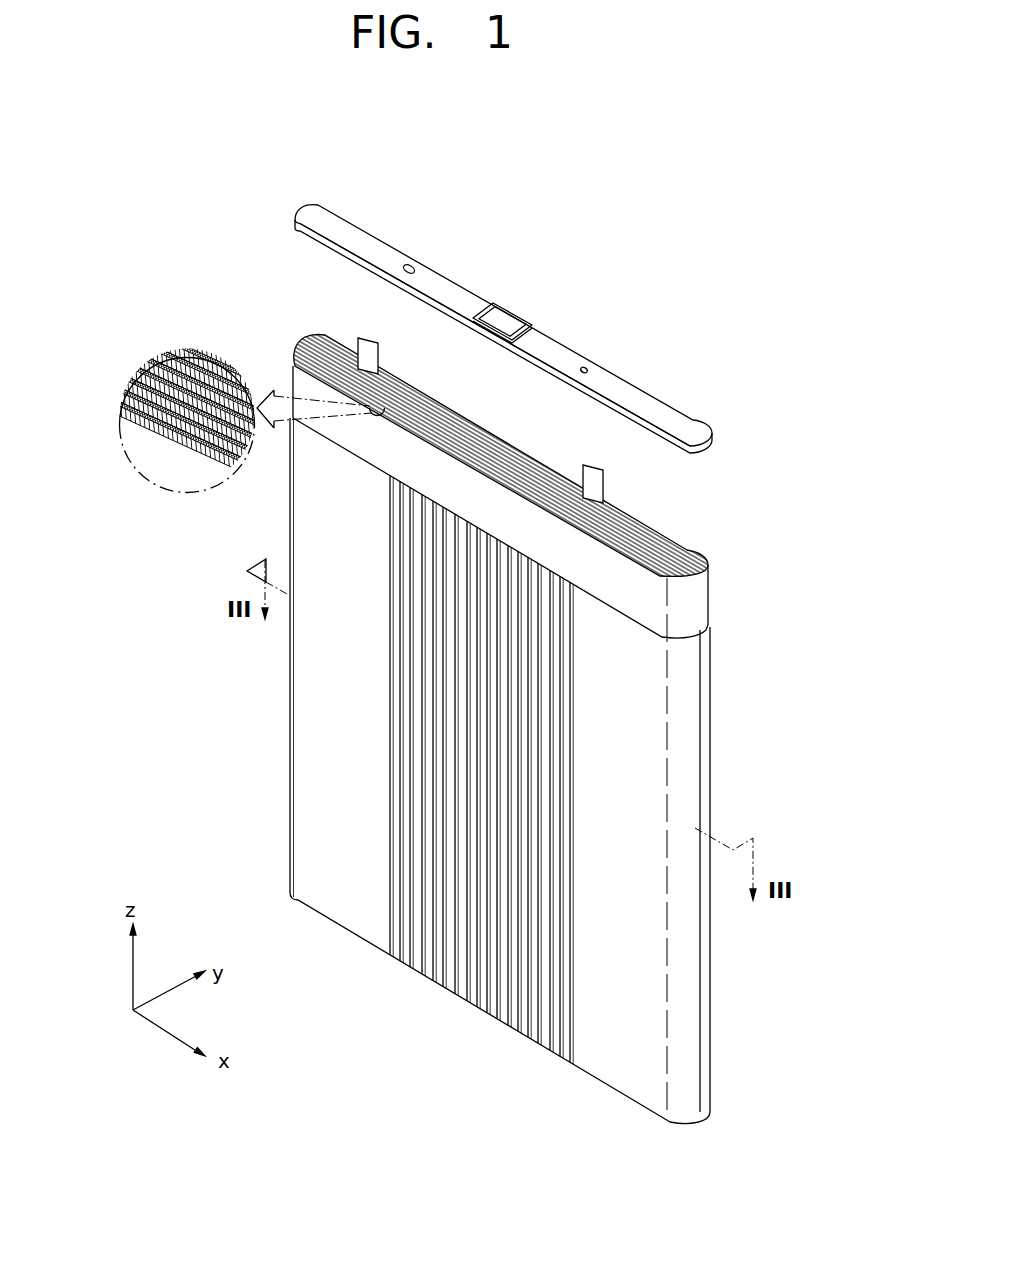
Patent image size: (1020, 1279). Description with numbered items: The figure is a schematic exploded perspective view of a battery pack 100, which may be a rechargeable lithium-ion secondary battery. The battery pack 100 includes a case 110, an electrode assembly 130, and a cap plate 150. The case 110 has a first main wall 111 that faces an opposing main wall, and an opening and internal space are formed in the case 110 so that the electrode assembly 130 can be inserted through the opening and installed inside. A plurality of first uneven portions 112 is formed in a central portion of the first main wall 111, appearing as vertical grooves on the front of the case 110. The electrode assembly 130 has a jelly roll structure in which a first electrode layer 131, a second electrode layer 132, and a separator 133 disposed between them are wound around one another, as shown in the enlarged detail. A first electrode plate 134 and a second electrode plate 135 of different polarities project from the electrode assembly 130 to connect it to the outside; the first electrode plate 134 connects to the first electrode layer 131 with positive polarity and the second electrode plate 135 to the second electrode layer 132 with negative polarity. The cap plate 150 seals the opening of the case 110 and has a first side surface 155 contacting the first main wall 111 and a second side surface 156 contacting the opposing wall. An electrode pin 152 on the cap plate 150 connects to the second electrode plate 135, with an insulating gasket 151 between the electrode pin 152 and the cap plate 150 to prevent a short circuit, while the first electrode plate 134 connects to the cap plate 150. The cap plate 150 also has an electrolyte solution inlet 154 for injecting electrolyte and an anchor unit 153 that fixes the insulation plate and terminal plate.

The battery pack 100 is at (625, 240).
The case 110 is at (440, 771).
The first main wall 111 is at (332, 754).
The first uneven portions 112 is at (412, 912).
The electrode assembly 130 is at (541, 691).
The first electrode layer 131 is at (183, 425).
The second electrode layer 132 is at (180, 431).
The separator 133 is at (177, 437).
The first electrode plate 134 is at (362, 340).
The second electrode plate 135 is at (603, 485).
The cap plate 150 is at (503, 304).
The gasket 151 is at (527, 325).
The electrode pin 152 is at (529, 285).
The anchor unit 153 is at (588, 366).
The electrolyte solution inlet 154 is at (410, 265).
The first side surface 155 is at (533, 365).
The second side surface 156 is at (648, 392).